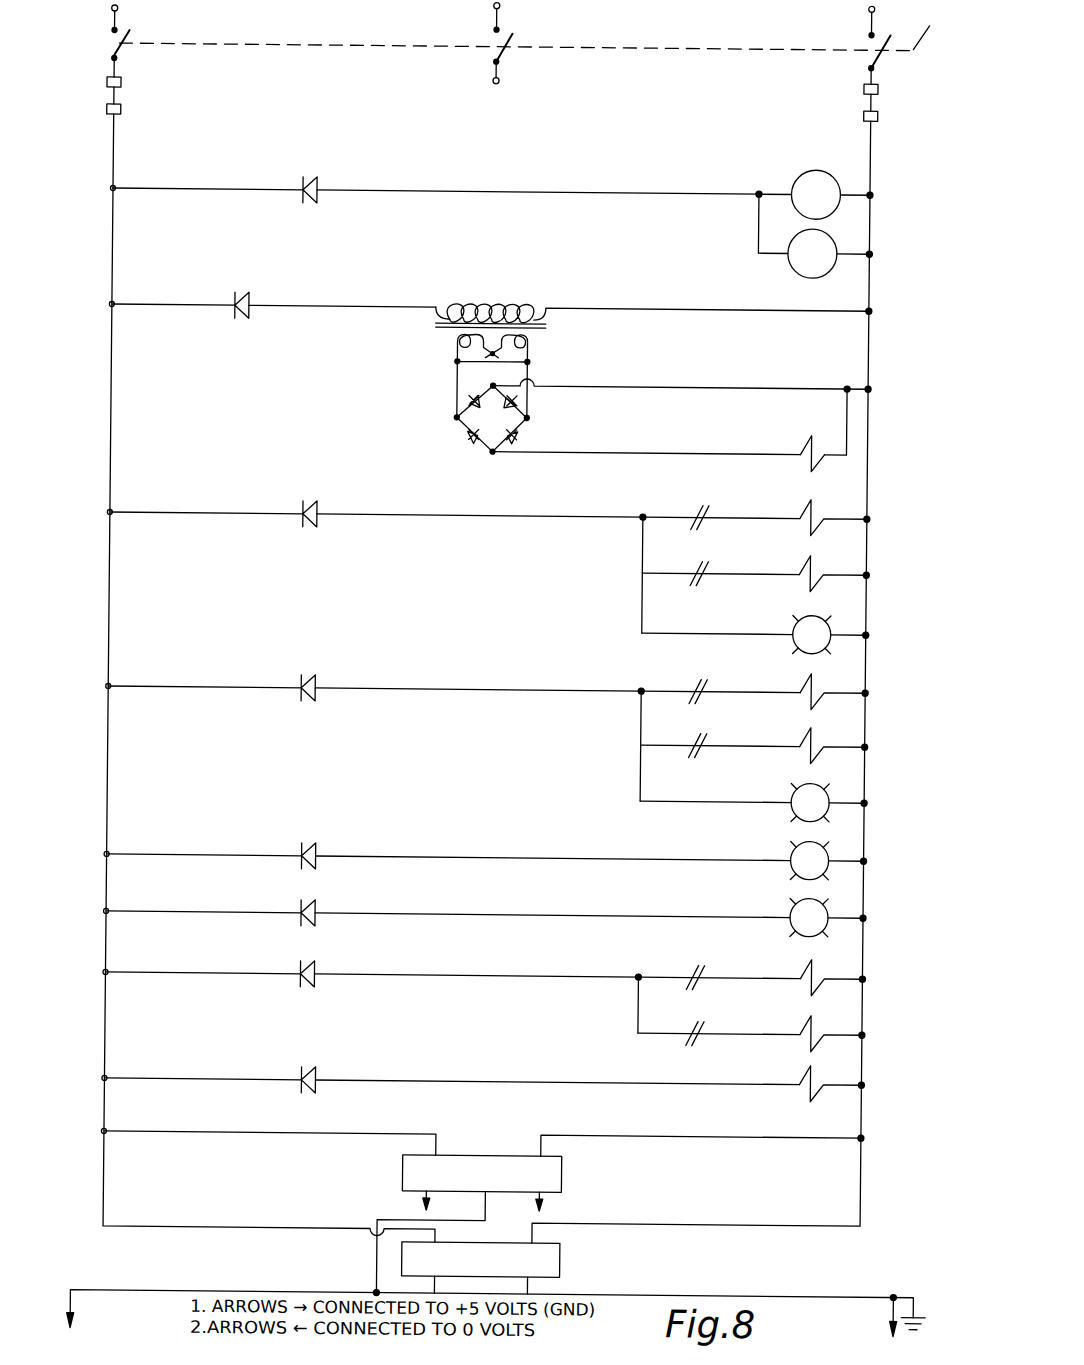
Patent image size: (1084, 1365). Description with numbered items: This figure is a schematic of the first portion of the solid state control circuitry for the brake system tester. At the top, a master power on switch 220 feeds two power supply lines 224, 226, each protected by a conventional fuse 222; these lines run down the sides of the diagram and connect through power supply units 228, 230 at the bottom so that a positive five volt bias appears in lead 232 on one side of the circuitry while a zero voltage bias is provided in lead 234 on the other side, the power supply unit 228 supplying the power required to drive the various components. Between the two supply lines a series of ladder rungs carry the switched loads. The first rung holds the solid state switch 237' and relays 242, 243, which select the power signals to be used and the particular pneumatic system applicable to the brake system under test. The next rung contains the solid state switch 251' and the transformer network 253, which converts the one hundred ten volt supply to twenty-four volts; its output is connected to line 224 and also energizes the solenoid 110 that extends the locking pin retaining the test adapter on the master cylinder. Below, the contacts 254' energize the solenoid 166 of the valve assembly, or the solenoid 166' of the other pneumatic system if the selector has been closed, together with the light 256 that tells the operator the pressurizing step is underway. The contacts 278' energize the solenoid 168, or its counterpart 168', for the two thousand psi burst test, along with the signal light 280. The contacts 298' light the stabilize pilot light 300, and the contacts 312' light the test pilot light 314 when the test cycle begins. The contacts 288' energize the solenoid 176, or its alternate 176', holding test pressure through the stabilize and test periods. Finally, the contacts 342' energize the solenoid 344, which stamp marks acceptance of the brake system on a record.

The master power on switch 220 is at (330, 43).
The fuses 222 is at (120, 97).
The power supply line 224 is at (863, 136).
The power supply line 226 is at (113, 160).
The solid state switch 237' is at (436, 180).
The relay 242 is at (793, 177).
The relay 243 is at (800, 257).
The solid state switch 251' is at (274, 295).
The transformer network 253 is at (494, 298).
The solenoid 110 is at (805, 430).
The contacts 254' is at (376, 505).
The solenoid 166 is at (755, 509).
The solenoid 166' is at (754, 560).
The light 256 is at (795, 621).
The contacts 278' is at (374, 678).
The solenoid 168 is at (753, 684).
The solenoid 168' is at (753, 742).
The signal light 280 is at (795, 793).
The contacts 298' is at (448, 848).
The stabilize pilot light 300 is at (795, 848).
The contacts 312' is at (448, 905).
The test pilot light 314 is at (795, 905).
The contacts 288' is at (371, 965).
The solenoid 176 is at (750, 971).
The solenoid 176' is at (750, 1031).
The contacts 342' is at (451, 1072).
The solenoid 344 is at (808, 1076).
The power supply unit 228 is at (575, 1173).
The power supply unit 230 is at (572, 1258).
The lead 234 is at (160, 1291).
The lead 232 is at (660, 1292).